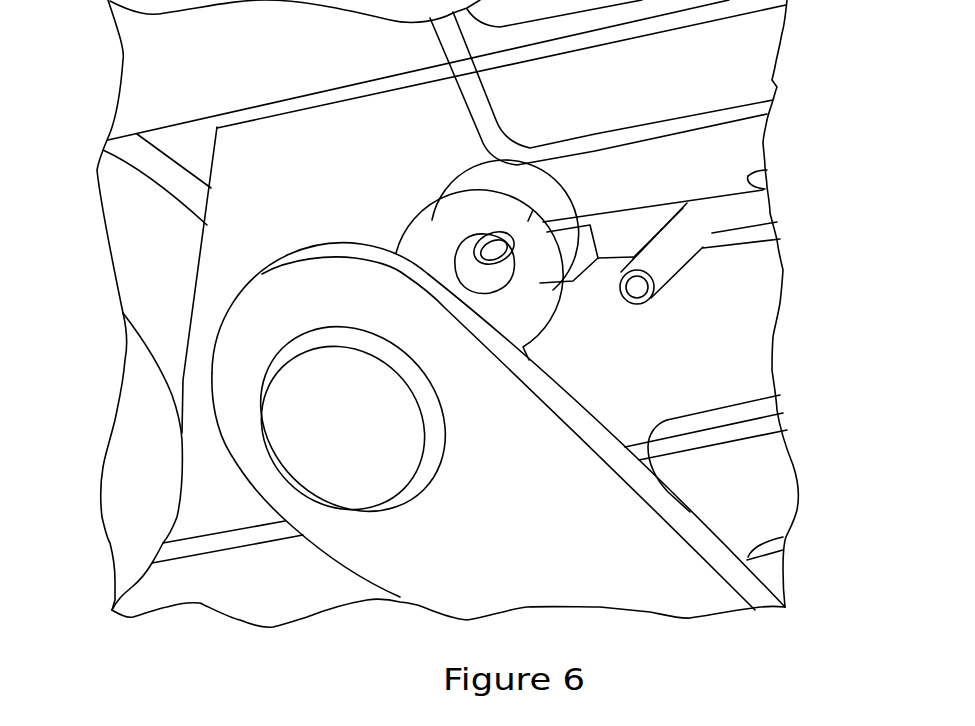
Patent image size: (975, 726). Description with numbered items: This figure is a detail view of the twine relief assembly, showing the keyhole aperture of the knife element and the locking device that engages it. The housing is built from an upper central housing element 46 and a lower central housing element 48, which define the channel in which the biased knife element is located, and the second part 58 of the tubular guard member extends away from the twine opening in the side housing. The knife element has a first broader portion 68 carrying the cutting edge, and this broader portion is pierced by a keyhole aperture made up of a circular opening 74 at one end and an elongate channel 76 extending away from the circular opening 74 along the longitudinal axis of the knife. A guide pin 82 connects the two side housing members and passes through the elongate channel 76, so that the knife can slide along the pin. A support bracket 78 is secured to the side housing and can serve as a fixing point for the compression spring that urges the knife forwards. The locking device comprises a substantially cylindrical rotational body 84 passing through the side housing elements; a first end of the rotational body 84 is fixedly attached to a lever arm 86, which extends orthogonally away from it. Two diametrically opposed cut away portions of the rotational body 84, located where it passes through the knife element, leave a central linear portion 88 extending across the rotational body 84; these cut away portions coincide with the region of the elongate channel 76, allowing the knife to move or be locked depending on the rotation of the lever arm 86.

The upper central housing element 46 is at (216, 66).
The lower central housing element 48 is at (294, 595).
The second part of tubular guard member 58 is at (145, 458).
The first broader portion 68 is at (319, 185).
The circular opening 74 is at (451, 195).
The elongate channel 76 is at (767, 170).
The support bracket 78 is at (748, 68).
The guide pin 82 is at (683, 249).
The rotational body 84 is at (357, 438).
The lever arm 86 is at (576, 553).
The central linear portion 88 is at (542, 221).